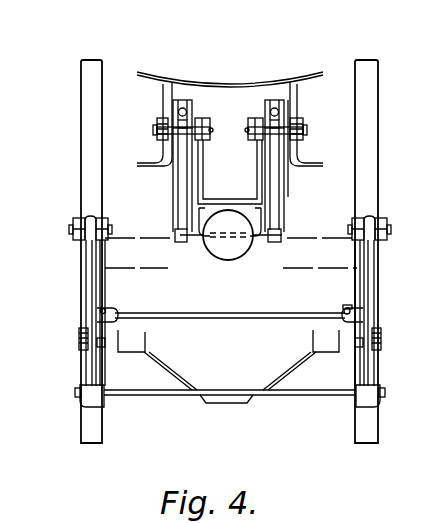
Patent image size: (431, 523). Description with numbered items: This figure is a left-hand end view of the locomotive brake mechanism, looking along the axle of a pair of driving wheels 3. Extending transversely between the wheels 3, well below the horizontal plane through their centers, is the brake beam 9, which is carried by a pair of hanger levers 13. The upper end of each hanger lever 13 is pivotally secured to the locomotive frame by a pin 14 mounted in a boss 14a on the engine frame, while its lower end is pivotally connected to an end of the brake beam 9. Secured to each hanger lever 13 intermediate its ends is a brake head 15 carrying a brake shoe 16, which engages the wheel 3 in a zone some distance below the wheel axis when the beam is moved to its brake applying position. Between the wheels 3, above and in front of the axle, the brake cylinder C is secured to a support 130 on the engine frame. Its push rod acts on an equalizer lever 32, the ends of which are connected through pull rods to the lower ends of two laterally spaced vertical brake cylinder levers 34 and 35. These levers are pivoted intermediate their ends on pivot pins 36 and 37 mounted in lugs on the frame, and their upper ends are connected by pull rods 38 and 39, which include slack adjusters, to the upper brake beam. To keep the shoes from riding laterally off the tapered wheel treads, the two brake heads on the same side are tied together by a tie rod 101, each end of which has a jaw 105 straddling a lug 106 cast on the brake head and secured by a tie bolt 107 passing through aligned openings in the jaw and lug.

The driving wheel 3 is at (103, 424).
The brake beam 9 is at (292, 396).
The hanger lever 13 is at (92, 252).
The pin 14 is at (72, 231).
The boss 14a is at (81, 218).
The brake head 15 is at (100, 280).
The brake shoe 16 is at (86, 264).
The equalizer lever 32 is at (250, 247).
The brake cylinder lever 34 is at (289, 168).
The brake cylinder lever 35 is at (174, 176).
The pivot pin 36 is at (246, 131).
The pivot pin 37 is at (211, 128).
The pull rod 38 is at (277, 100).
The pull rod 39 is at (184, 100).
The tie rod 101 is at (237, 313).
The jaw 105 is at (314, 330).
The lug 106 is at (343, 334).
The tie bolt 107 is at (347, 308).
The support 130 is at (242, 203).
The brake cylinder C is at (208, 250).